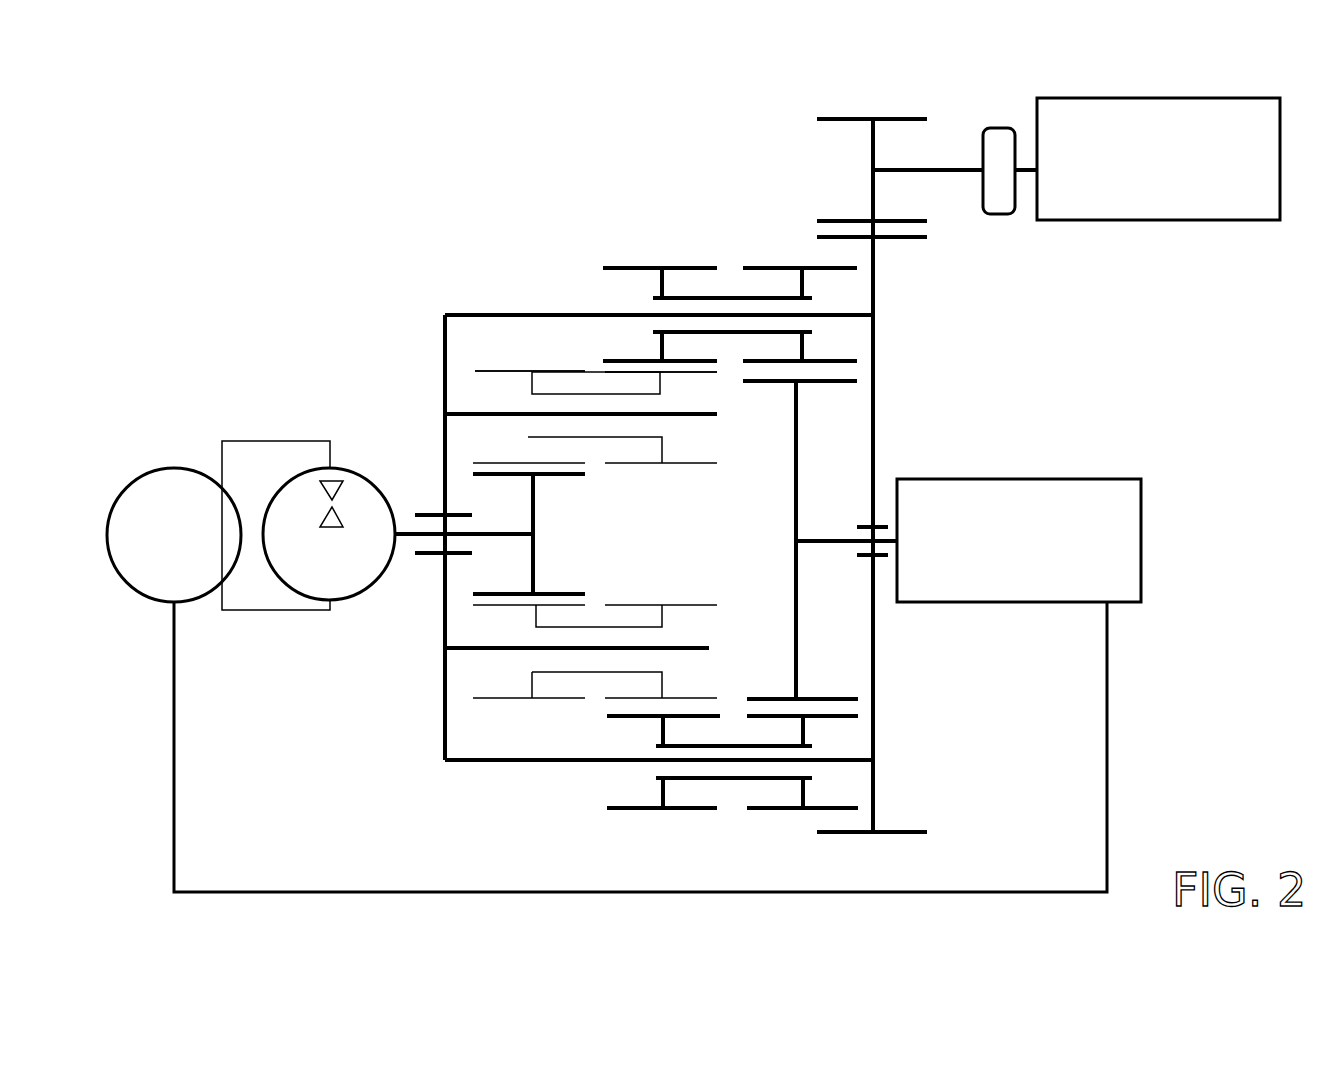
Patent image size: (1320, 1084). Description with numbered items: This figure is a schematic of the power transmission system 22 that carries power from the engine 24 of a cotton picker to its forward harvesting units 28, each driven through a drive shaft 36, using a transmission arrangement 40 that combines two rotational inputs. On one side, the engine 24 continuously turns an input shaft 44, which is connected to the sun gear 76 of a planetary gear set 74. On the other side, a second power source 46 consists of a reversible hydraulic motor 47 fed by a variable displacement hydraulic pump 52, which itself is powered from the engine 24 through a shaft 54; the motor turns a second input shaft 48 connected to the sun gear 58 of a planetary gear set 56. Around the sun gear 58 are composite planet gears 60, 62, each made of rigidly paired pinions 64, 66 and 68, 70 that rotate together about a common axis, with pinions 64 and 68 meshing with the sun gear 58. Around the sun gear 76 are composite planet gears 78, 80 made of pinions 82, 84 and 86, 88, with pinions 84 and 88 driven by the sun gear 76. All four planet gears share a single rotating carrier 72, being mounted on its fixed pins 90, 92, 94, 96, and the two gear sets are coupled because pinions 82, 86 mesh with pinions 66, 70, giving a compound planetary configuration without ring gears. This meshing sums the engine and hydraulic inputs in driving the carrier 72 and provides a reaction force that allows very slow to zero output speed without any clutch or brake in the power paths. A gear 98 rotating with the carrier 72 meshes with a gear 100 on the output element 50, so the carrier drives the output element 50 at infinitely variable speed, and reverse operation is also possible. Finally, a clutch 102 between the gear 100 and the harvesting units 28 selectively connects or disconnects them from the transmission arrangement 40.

The power transmission system 22 is at (1055, 400).
The engine 24 is at (1019, 540).
The harvesting units 28 is at (1158, 159).
The drive shaft 36 is at (1027, 172).
The transmission arrangement 40 is at (575, 256).
The input shaft 44 is at (830, 541).
The power source 46 is at (287, 418).
The hydraulic motor 47 is at (362, 478).
The input shaft 48 is at (403, 535).
The output element 50 is at (905, 170).
The hydraulic pump 52 is at (172, 468).
The shaft 54 is at (350, 892).
The gear set 56 is at (476, 361).
The sun gear 58 is at (533, 510).
The planet gear 60 is at (526, 384).
The planet gear 62 is at (528, 681).
The pinion 64 is at (495, 371).
The pinion 66 is at (683, 372).
The pinion 68 is at (502, 698).
The pinion 70 is at (690, 698).
The carrier 72 is at (446, 350).
The gear set 74 is at (796, 822).
The sun gear 76 is at (796, 500).
The planet gear 78 is at (712, 296).
The planet gear 80 is at (735, 783).
The pinion 82 is at (636, 268).
The pinion 84 is at (775, 268).
The pinion 86 is at (640, 808).
The pinion 88 is at (778, 808).
The pin 90 is at (685, 414).
The pin 92 is at (682, 648).
The pin 94 is at (622, 315).
The pin 96 is at (833, 760).
The gear 98 is at (903, 238).
The gear 100 is at (845, 119).
The clutch 102 is at (1000, 128).